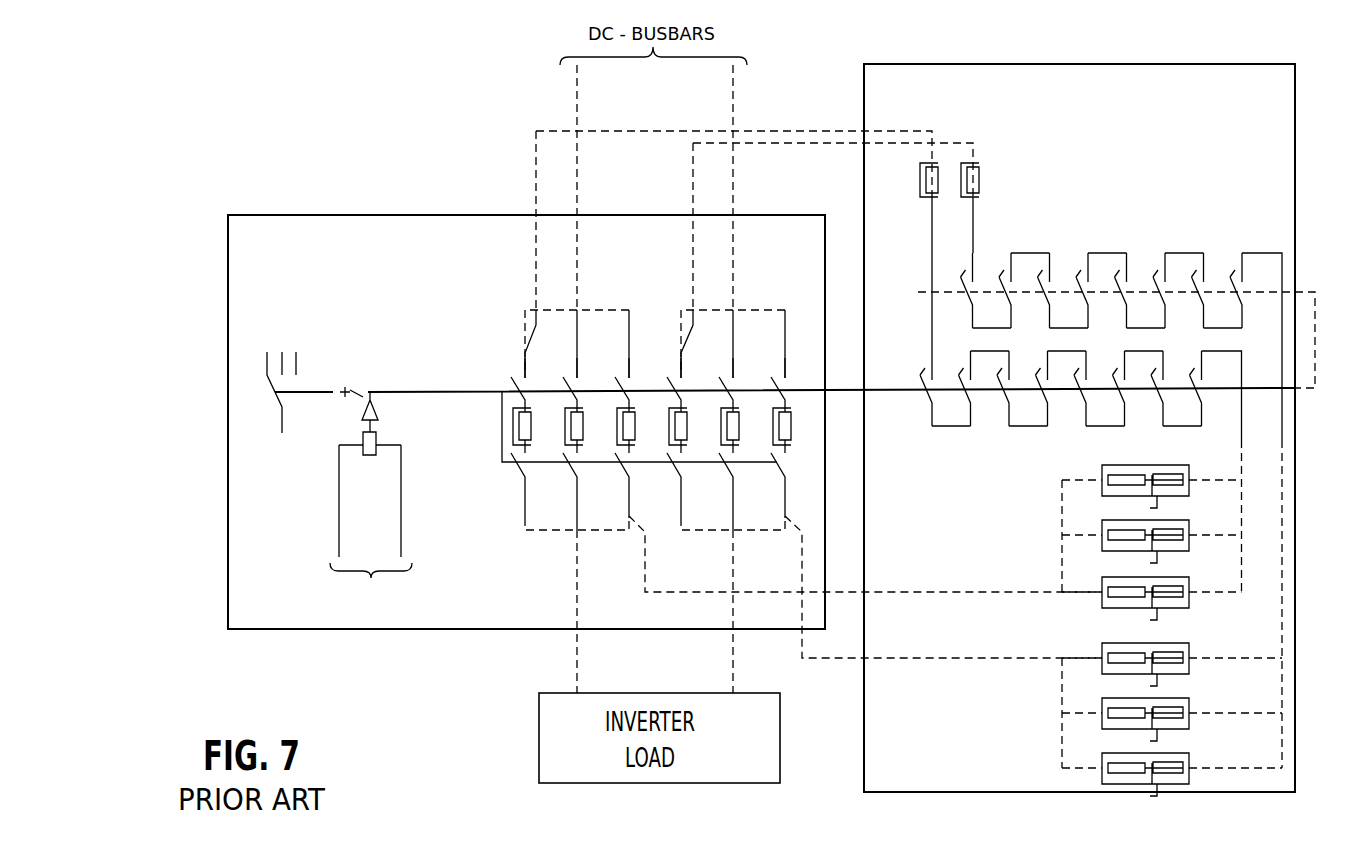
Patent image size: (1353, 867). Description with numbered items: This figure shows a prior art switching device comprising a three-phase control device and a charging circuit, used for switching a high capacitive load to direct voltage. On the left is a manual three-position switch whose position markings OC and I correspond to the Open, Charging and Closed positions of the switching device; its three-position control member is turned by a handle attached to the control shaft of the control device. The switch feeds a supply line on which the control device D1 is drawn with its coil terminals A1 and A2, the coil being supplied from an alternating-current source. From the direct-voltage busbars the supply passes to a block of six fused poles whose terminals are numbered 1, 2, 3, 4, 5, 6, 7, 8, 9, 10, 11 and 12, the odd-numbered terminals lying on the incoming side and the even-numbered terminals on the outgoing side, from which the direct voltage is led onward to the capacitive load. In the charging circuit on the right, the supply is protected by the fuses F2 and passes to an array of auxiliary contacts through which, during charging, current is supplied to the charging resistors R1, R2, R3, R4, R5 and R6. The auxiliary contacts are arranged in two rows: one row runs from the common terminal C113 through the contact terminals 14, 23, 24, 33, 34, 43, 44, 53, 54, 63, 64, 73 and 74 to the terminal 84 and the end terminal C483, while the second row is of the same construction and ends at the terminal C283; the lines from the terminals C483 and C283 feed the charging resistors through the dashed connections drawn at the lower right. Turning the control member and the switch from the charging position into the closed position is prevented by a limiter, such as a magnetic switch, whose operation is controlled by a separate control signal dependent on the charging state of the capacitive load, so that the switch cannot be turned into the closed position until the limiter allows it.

The overcurrent release / circuit breaker OC is at (280, 379).
The contactor coil D1 is at (371, 475).
The coil terminal A1 is at (395, 489).
The coil terminal A2 is at (345, 489).
The fuse pole terminal 1 is at (526, 401).
The fuse pole terminal 2 is at (526, 479).
The fuse pole terminal 3 is at (578, 401).
The fuse pole terminal 4 is at (578, 479).
The fuse pole terminal 5 is at (630, 401).
The fuse pole terminal 6 is at (630, 479).
The fuse pole terminal 7 is at (682, 401).
The fuse pole terminal 8 is at (682, 479).
The fuse pole terminal 9 is at (734, 401).
The fuse pole terminal 10 is at (740, 479).
The fuse pole terminal 11 is at (792, 401).
The fuse pole terminal 12 is at (792, 479).
The control fuses F2 is at (939, 249).
The contact block terminal C113 is at (967, 321).
The auxiliary contact terminal 14 is at (965, 339).
The auxiliary contact terminal 23 is at (1010, 316).
The auxiliary contact terminal 24 is at (999, 339).
The auxiliary contact terminal 33 is at (1048, 319).
The auxiliary contact terminal 34 is at (1042, 339).
The auxiliary contact terminal 43 is at (1087, 316).
The auxiliary contact terminal 44 is at (1076, 339).
The auxiliary contact terminal 53 is at (1125, 319).
The auxiliary contact terminal 54 is at (1119, 339).
The auxiliary contact terminal 63 is at (1164, 316).
The auxiliary contact terminal 64 is at (1153, 339).
The auxiliary contact terminal 73 is at (1202, 319).
The auxiliary contact terminal 74 is at (1196, 339).
The auxiliary contact terminal 84 is at (1230, 339).
The contact block terminal C483 is at (1262, 510).
The contact block terminal C283 is at (1222, 471).
The relay R1 is at (1152, 474).
The relay R2 is at (1152, 531).
The relay R3 is at (1152, 588).
The relay R4 is at (1172, 654).
The relay R5 is at (1172, 709).
The relay R6 is at (1172, 764).